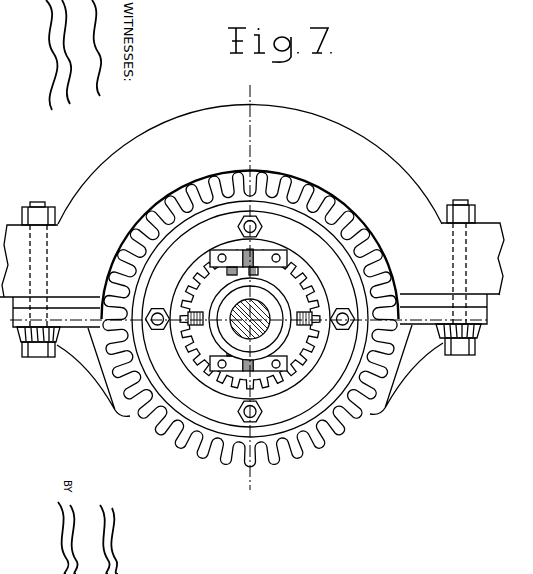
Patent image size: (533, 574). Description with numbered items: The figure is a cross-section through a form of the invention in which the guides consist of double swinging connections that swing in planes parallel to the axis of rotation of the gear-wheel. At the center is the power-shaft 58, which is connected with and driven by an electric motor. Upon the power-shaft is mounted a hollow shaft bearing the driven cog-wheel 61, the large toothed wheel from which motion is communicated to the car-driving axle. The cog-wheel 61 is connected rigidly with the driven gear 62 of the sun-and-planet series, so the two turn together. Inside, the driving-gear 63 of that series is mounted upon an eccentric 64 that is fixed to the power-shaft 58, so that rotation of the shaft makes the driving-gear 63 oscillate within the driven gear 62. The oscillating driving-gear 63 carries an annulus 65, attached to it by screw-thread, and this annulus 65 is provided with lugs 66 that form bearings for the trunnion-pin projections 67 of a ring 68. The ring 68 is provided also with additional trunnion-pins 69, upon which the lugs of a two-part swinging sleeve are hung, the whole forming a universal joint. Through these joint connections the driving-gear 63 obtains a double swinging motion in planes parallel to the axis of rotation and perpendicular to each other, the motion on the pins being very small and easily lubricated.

The power-shaft 58 is at (258, 309).
The driven cog-wheel 61 is at (182, 424).
The driven gear 62 is at (201, 369).
The driving-gear 63 is at (316, 283).
The eccentric 64 is at (250, 319).
The annulus 65 is at (306, 273).
The lugs 66 is at (283, 253).
The trunnion-pin projections 67 is at (257, 243).
The ring 68 is at (296, 265).
The trunnion-pins 69 is at (185, 295).